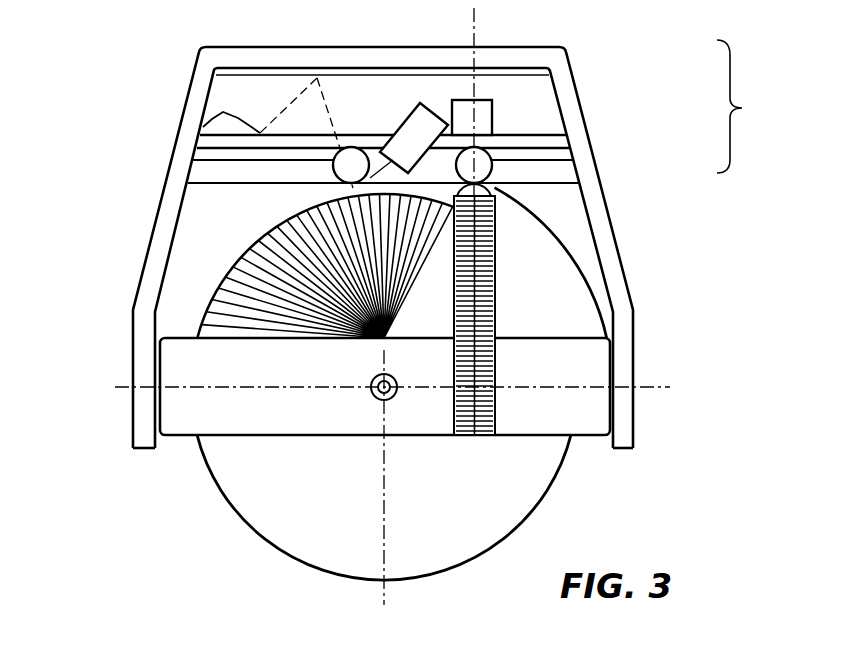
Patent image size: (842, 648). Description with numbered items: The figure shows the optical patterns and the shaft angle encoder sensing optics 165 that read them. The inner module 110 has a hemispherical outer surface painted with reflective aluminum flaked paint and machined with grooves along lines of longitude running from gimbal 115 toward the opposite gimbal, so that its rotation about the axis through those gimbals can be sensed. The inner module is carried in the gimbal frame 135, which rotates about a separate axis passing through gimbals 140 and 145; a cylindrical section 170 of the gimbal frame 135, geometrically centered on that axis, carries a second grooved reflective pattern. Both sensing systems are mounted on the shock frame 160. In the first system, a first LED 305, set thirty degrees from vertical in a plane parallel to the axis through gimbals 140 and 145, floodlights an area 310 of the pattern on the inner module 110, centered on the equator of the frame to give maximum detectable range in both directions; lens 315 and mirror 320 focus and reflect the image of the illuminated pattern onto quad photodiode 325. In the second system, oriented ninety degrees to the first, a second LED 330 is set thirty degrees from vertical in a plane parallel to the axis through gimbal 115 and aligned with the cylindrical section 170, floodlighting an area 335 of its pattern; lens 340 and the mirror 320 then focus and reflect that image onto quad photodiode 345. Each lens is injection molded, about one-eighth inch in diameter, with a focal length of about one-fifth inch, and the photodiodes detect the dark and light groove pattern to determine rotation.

The inner module 110 is at (264, 539).
The gimbal 115 is at (373, 392).
The gimbal frame 135 is at (247, 425).
The gimbal 140 is at (133, 375).
The gimbal 145 is at (633, 377).
The shock frame 160 is at (583, 170).
The shaft angle encoder sensing optics 165 is at (760, 106).
The cylindrical section 170 is at (475, 435).
The first LED 305 is at (414, 113).
The area 310 is at (293, 203).
The lens 315 is at (333, 167).
The mirror 320 is at (383, 68).
The quad photodiode 325 is at (203, 127).
The second LED 330 is at (485, 98).
The area 335 is at (520, 196).
The lens 340 is at (493, 167).
The quad photodiode 345 is at (493, 134).